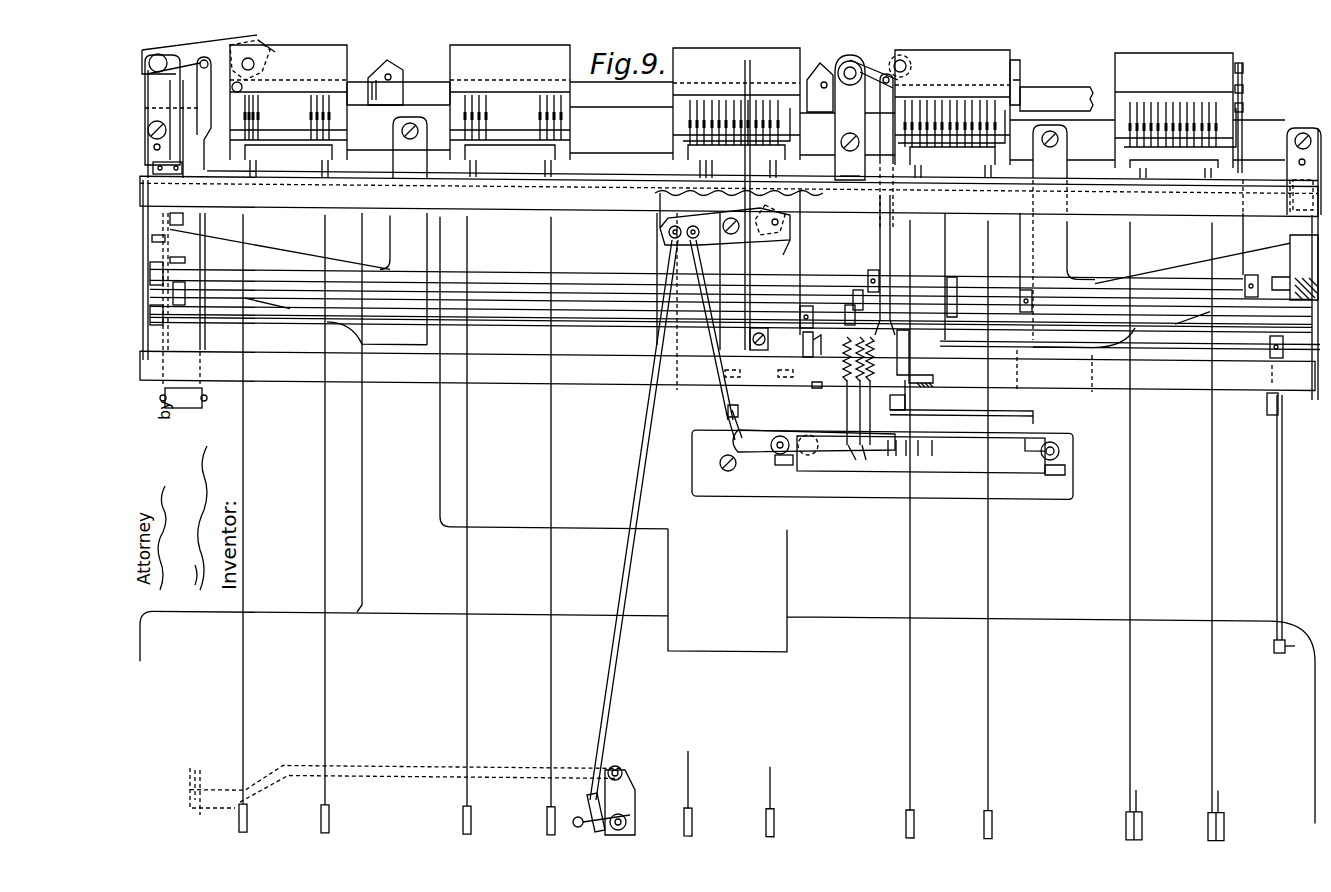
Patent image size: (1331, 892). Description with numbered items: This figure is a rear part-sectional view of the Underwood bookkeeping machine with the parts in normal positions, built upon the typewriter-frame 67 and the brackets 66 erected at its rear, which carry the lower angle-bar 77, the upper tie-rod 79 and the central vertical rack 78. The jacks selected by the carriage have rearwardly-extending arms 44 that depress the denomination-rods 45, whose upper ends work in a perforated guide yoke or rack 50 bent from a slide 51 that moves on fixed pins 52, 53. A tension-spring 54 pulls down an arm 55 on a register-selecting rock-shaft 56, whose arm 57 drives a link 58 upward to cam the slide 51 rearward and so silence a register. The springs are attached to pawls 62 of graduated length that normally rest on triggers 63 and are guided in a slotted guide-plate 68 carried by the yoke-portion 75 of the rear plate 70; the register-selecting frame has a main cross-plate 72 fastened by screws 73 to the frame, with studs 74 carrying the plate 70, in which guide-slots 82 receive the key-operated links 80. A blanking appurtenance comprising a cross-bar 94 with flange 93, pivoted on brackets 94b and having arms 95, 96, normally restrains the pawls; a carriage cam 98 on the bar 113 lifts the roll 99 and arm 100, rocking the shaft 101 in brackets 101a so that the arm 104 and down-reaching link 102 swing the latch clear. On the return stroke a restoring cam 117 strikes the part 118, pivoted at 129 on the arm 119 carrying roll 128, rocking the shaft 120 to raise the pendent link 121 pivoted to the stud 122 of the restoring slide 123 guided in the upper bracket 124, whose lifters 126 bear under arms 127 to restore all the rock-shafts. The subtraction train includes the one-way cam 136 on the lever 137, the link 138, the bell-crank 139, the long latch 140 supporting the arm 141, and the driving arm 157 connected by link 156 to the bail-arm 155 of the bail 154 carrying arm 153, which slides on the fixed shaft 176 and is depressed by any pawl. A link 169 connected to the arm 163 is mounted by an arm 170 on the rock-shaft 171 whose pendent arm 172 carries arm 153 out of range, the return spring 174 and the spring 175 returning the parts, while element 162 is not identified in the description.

The rearwardly-extending arms 44 is at (262, 116).
The denomination-rods 45 is at (250, 156).
The guide yoke or rack 50 is at (683, 142).
The slide or arm 51 is at (1022, 86).
The fixed pin 52 is at (1243, 68).
The fixed pin 53 is at (1243, 106).
The springs 54 is at (842, 366).
The arms 55 is at (866, 270).
The rock-shafts 56 is at (950, 277).
The arm 57 is at (1026, 290).
The link 58 is at (801, 242).
The pawls 62 is at (852, 398).
The triggers 63 is at (863, 457).
The brackets 66 is at (298, 238).
The typewriter-frame 67 is at (727, 518).
The horizontal guide-plate 68 is at (898, 400).
The rear vertical plate or wall 70 is at (921, 454).
The main cross-plate 72 is at (882, 464).
The screws 73 is at (722, 468).
The studs 74 is at (1053, 446).
The yoke-portion 75 is at (962, 402).
The transverse horizontal angle-bar 77 is at (727, 370).
The central vertical rack 78 is at (745, 262).
The upper transverse tie-rod 79 is at (729, 193).
The rearwardly-extending links 80 is at (896, 456).
The guide-slots 82 is at (928, 456).
The flange 93 is at (828, 388).
The cross-bar of bail (blanking appurtenance) 94 is at (874, 359).
The brackets 94b is at (921, 395).
The bail-arm 95 is at (910, 355).
The bail-arm 96 is at (813, 347).
The cam 98 is at (820, 66).
The roll 99 is at (908, 68).
The arm 100 is at (892, 70).
The rock-shaft 101 is at (850, 85).
The brackets 101a is at (841, 148).
The down-reaching link 102 is at (880, 228).
The arm 104 is at (878, 70).
The bar 113 is at (720, 96).
The restoring cam 117 is at (380, 68).
The part 118 is at (253, 66).
The arm 119 is at (199, 54).
The shaft 120 is at (162, 72).
The pendent link 121 is at (205, 334).
The stud 122 is at (178, 388).
The vertical restoring slide 123 is at (168, 334).
The upper bracket 124 is at (172, 165).
The restoring lifters 126 is at (176, 226).
The arms 127 is at (181, 290).
The roll 128 is at (218, 113).
The pivot 129 is at (277, 51).
The one-way cam 136 is at (766, 220).
The lever 137 is at (780, 248).
The link 138 is at (642, 430).
The bell-crank 139 is at (622, 780).
The long latch 140 is at (392, 766).
The arm 141 is at (196, 770).
The arm (subtraction-setting arm) 153 is at (823, 444).
The bail portion 154 is at (786, 465).
The bail-arm 155 is at (814, 441).
The link 156 is at (718, 344).
The driving arm 157 is at (739, 218).
The block 162 is at (1297, 650).
The arm 163 is at (1260, 460).
The link 169 is at (1263, 517).
The arm 170 is at (1266, 400).
The transverse rock-shaft 171 is at (972, 340).
The pendent arm 172 is at (775, 405).
The return spring 174 is at (625, 802).
The spring 175 is at (1280, 376).
The fixed shaft 176 is at (778, 454).